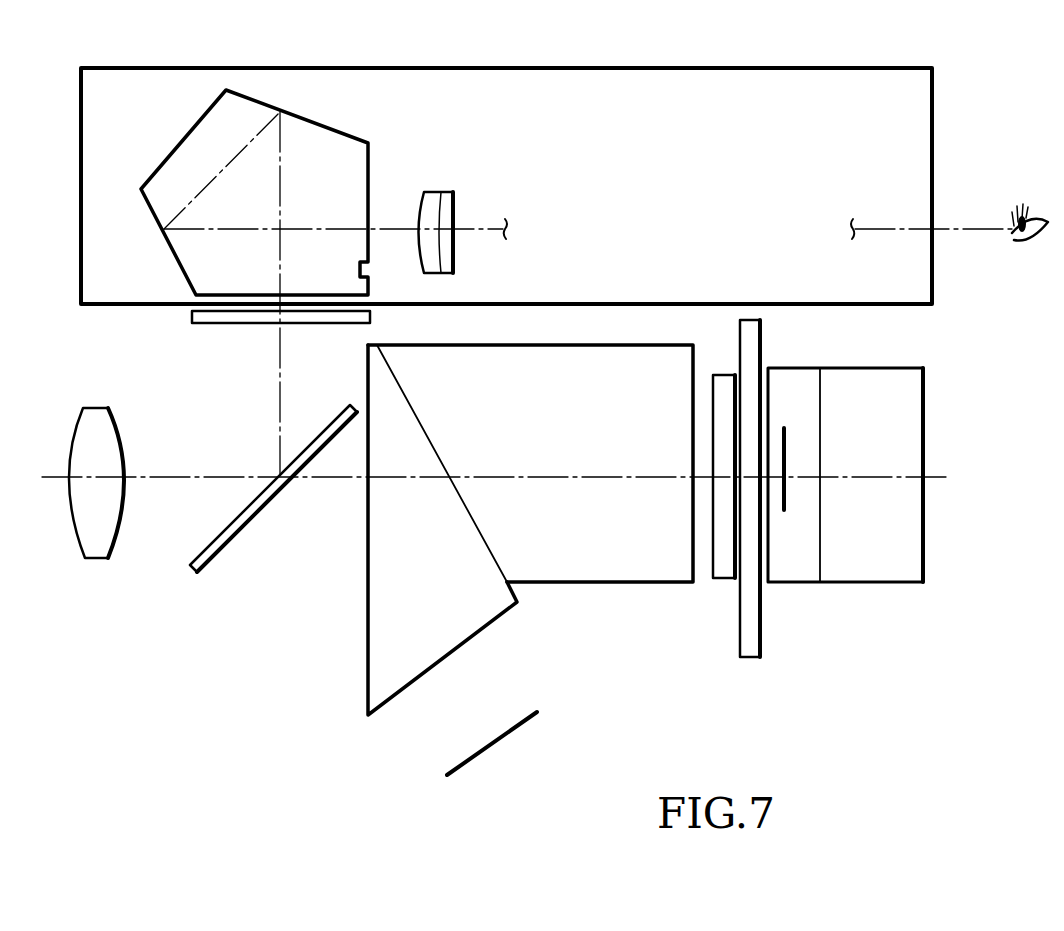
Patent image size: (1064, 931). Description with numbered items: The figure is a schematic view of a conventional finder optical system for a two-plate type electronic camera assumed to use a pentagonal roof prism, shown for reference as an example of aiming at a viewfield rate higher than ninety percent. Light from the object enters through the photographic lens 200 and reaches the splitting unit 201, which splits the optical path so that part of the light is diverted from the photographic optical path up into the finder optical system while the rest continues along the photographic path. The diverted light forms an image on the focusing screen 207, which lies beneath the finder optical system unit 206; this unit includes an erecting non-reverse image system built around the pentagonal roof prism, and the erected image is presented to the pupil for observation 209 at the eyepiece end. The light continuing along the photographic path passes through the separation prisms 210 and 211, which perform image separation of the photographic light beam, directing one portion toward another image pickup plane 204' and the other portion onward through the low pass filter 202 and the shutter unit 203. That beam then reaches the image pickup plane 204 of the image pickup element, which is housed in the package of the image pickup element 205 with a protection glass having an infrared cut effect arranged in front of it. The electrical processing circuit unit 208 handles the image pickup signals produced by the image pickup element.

The photographic lens 200 is at (92, 588).
The splitting unit 201 is at (237, 587).
The low pass filter 202 is at (698, 607).
The shutter unit 203 is at (750, 688).
The image pickup plane 204 is at (805, 535).
The another image pickup plane 204' is at (508, 757).
The package of the image pickup element 205 is at (812, 347).
The finder optical system unit 206 is at (824, 48).
The focusing screen 207 is at (210, 352).
The electrical processing circuit unit 208 is at (898, 607).
The pupil for observation 209 is at (1040, 173).
The separation prism 210 is at (410, 713).
The separation prism 211 is at (580, 607).